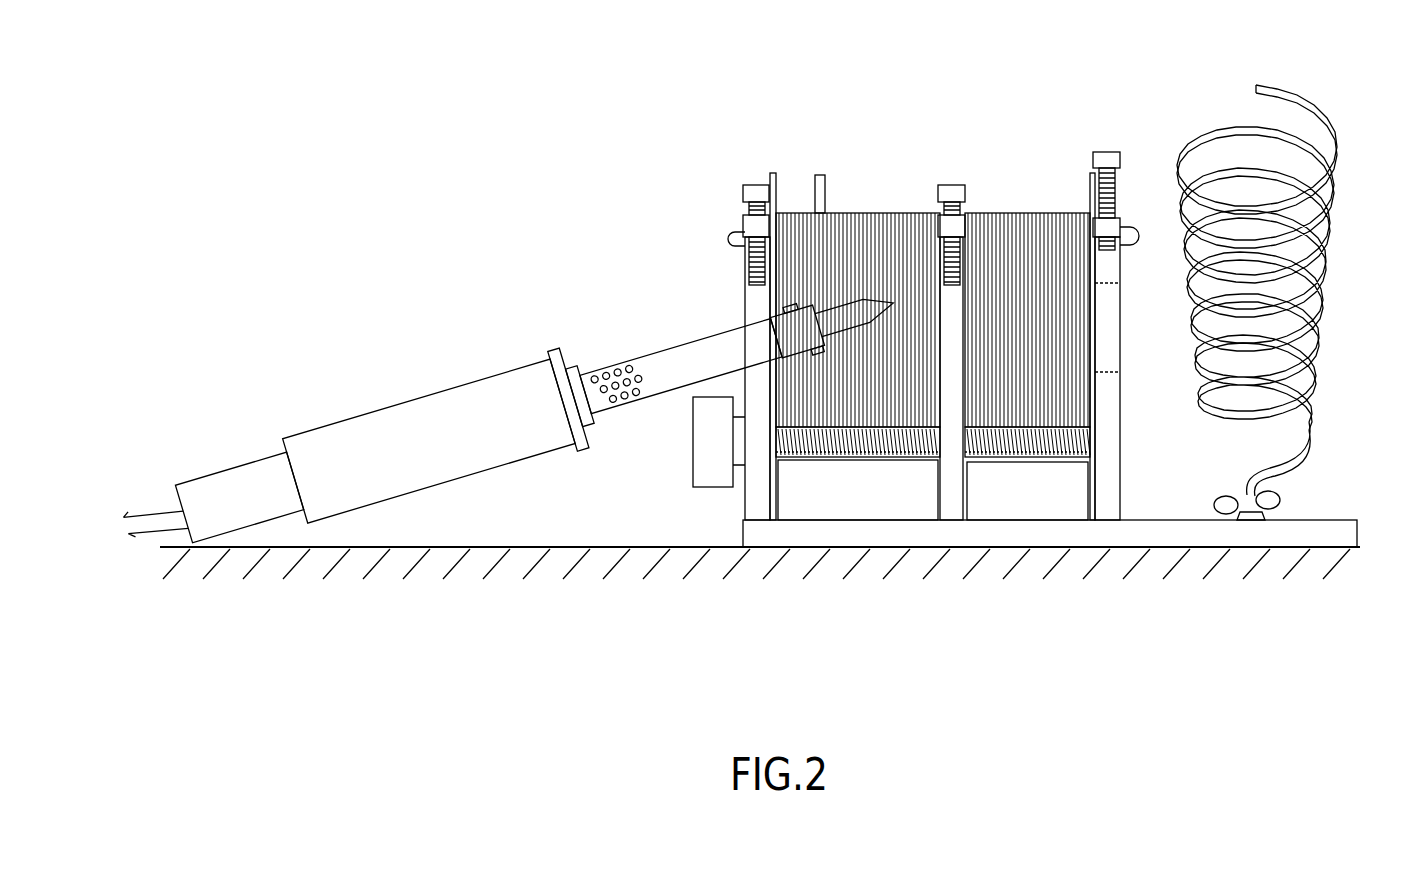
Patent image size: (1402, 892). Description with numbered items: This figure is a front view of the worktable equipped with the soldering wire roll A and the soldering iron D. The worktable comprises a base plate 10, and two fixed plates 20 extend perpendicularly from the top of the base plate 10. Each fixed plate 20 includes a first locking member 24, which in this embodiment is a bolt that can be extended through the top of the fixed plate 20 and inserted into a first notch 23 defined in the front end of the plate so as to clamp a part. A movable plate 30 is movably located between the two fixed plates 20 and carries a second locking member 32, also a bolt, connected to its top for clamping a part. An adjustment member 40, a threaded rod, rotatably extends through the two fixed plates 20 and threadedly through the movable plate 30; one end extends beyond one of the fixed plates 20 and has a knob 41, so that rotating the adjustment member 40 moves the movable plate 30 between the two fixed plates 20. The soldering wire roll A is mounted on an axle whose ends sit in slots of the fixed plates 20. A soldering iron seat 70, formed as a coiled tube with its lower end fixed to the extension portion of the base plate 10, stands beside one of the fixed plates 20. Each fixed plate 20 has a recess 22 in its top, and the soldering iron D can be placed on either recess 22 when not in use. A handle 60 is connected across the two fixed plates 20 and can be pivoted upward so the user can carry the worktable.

The base plate 10 is at (1327, 523).
The fixed plate 20 is at (752, 496).
The recess 22 is at (771, 363).
The first notch 23 is at (1108, 265).
The first locking member 24 is at (753, 192).
The movable plate 30 is at (962, 481).
The second locking member 32 is at (951, 190).
The adjustment member 40 is at (818, 457).
The knob 41 is at (699, 468).
The handle 60 is at (737, 232).
The soldering iron seat 70 is at (1337, 127).
The soldering wire roll A is at (877, 213).
The soldering iron D is at (507, 429).